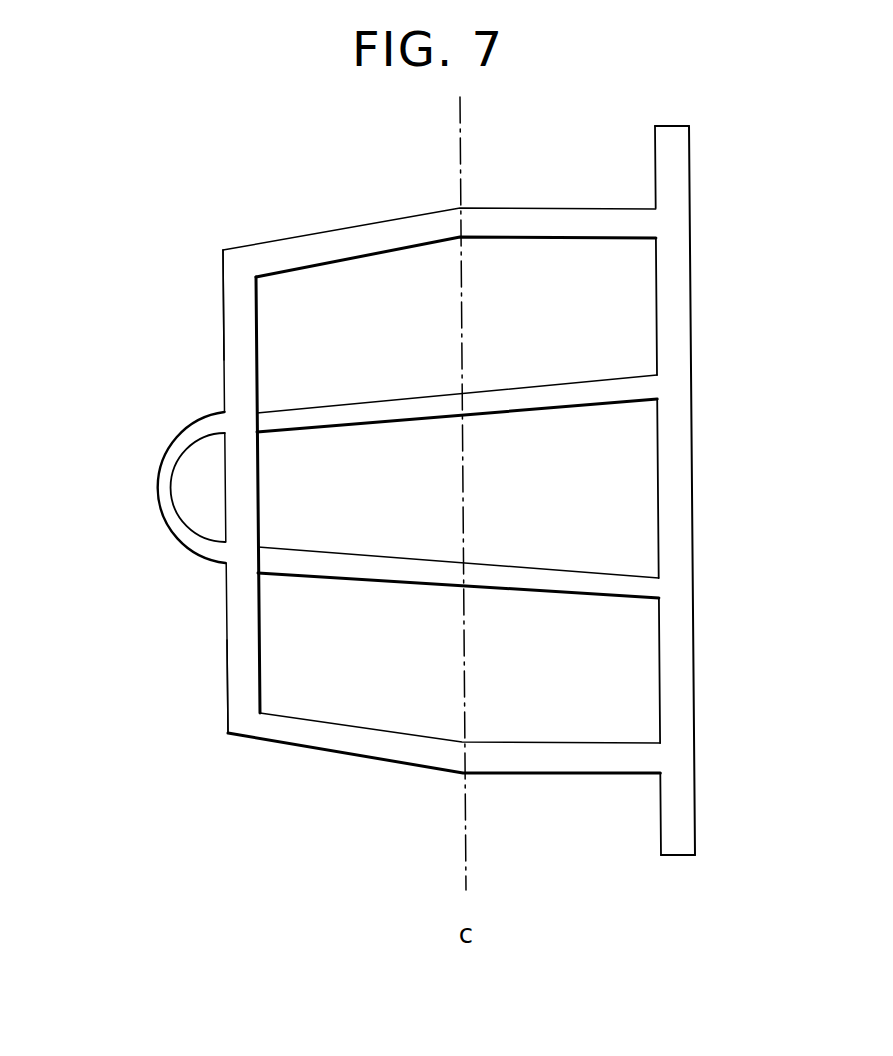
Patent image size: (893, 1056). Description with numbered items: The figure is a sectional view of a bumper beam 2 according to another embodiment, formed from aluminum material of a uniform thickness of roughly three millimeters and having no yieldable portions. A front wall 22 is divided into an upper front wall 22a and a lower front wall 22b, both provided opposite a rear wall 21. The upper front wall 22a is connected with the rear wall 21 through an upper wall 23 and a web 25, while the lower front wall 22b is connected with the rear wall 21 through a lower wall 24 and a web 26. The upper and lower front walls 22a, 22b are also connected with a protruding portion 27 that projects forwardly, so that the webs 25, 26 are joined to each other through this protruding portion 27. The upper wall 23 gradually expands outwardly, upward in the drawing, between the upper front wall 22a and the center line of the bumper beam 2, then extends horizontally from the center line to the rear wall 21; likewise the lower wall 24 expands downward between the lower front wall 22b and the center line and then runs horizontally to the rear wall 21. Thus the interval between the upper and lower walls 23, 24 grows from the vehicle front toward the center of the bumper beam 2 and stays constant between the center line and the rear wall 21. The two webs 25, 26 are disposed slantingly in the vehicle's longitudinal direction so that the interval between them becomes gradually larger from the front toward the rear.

The bumper beam 2 is at (145, 167).
The rear wall 21 is at (680, 460).
The front wall 22 is at (238, 624).
The upper front wall 22a is at (238, 327).
The lower front wall 22b is at (240, 697).
The upper wall 23 is at (320, 246).
The lower wall 24 is at (323, 735).
The web 25 is at (320, 415).
The web 26 is at (318, 560).
The protruding portion 27 is at (160, 492).